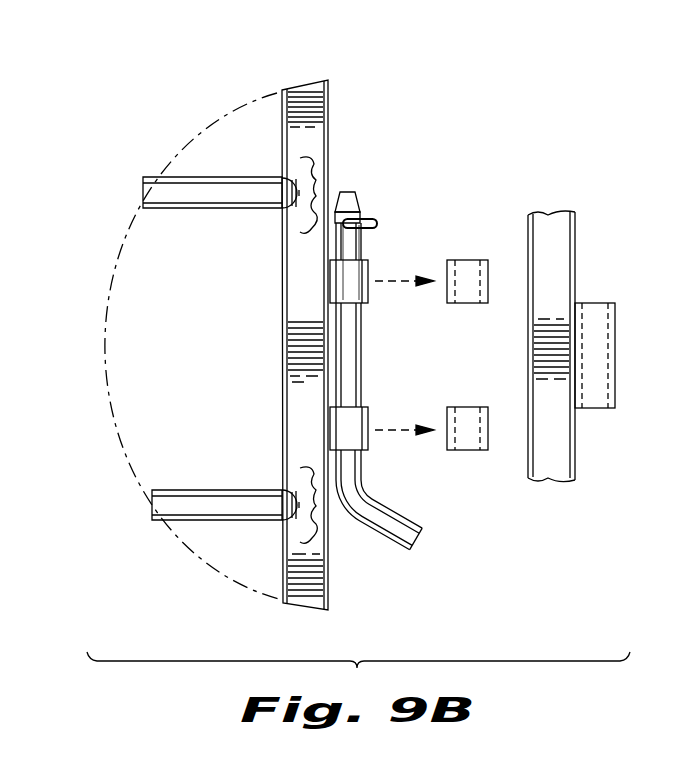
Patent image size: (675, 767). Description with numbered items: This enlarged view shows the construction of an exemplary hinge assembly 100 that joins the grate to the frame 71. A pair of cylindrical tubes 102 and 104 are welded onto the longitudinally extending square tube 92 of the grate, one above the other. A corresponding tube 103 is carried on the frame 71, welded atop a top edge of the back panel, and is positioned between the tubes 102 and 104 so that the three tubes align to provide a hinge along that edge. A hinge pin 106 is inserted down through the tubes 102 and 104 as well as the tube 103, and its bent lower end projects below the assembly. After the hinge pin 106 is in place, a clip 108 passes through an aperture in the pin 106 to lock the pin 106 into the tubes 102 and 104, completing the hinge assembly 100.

The frame 71 is at (552, 245).
The square tube 92 is at (330, 110).
The hinge assembly 100 is at (500, 184).
The cylindrical tube 102 is at (368, 267).
The tube 103 is at (590, 392).
The cylindrical tube 104 is at (370, 442).
The hinge pin 106 is at (383, 540).
The clip 108 is at (368, 217).